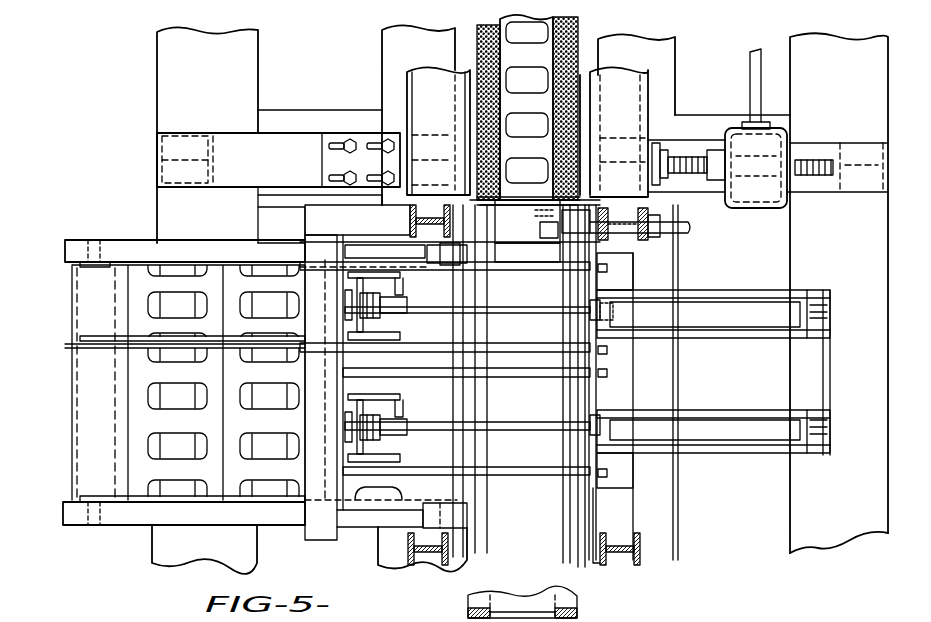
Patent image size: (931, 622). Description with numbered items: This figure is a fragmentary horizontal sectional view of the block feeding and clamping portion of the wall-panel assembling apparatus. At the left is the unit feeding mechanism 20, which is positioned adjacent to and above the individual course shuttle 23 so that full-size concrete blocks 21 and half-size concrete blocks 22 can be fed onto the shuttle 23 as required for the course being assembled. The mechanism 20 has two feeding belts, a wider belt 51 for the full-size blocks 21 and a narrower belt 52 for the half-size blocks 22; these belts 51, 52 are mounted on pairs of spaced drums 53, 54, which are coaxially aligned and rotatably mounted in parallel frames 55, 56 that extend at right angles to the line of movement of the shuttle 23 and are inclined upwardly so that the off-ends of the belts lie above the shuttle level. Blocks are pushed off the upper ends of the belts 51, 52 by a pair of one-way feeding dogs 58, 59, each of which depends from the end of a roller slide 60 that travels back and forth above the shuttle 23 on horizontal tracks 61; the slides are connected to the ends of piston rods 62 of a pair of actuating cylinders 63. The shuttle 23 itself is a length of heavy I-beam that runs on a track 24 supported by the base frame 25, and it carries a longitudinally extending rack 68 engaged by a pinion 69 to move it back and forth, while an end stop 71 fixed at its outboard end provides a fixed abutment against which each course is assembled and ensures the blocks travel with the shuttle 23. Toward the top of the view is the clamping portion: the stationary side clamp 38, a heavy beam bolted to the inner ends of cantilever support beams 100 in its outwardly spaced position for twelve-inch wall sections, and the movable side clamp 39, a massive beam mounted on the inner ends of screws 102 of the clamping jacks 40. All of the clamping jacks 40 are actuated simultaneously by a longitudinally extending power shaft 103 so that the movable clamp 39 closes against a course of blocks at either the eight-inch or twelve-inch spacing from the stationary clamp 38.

The unit feeding mechanism 20 is at (127, 216).
The full-size concrete blocks 21 is at (584, 58).
The half-size concrete blocks 22 is at (580, 133).
The individual course shuttle 23 is at (523, 240).
The track 24 is at (562, 522).
The base frame 25 is at (157, 93).
The side clamp 38 is at (405, 98).
The side clamp 39 is at (652, 91).
The clamping jacks 40 is at (802, 178).
The wider belt 51 is at (72, 428).
The narrower belt 52 is at (72, 305).
The spaced drums 53 is at (72, 497).
The spaced drums 54 is at (80, 339).
The frame 55 is at (65, 255).
The frame 56 is at (68, 346).
The one-way feeding dog 58 is at (390, 431).
The one-way feeding dog 59 is at (382, 316).
The roller slide 60 is at (396, 275).
The horizontal tracks 61 is at (503, 272).
The piston rods 62 is at (510, 312).
The actuating cylinders 63 is at (763, 282).
The rack 68 is at (535, 210).
The pinion 69 is at (560, 244).
The end stop 71 is at (506, 200).
The cantilever support beams 100 is at (240, 136).
The screws 102 is at (684, 158).
The power shaft 103 is at (752, 100).